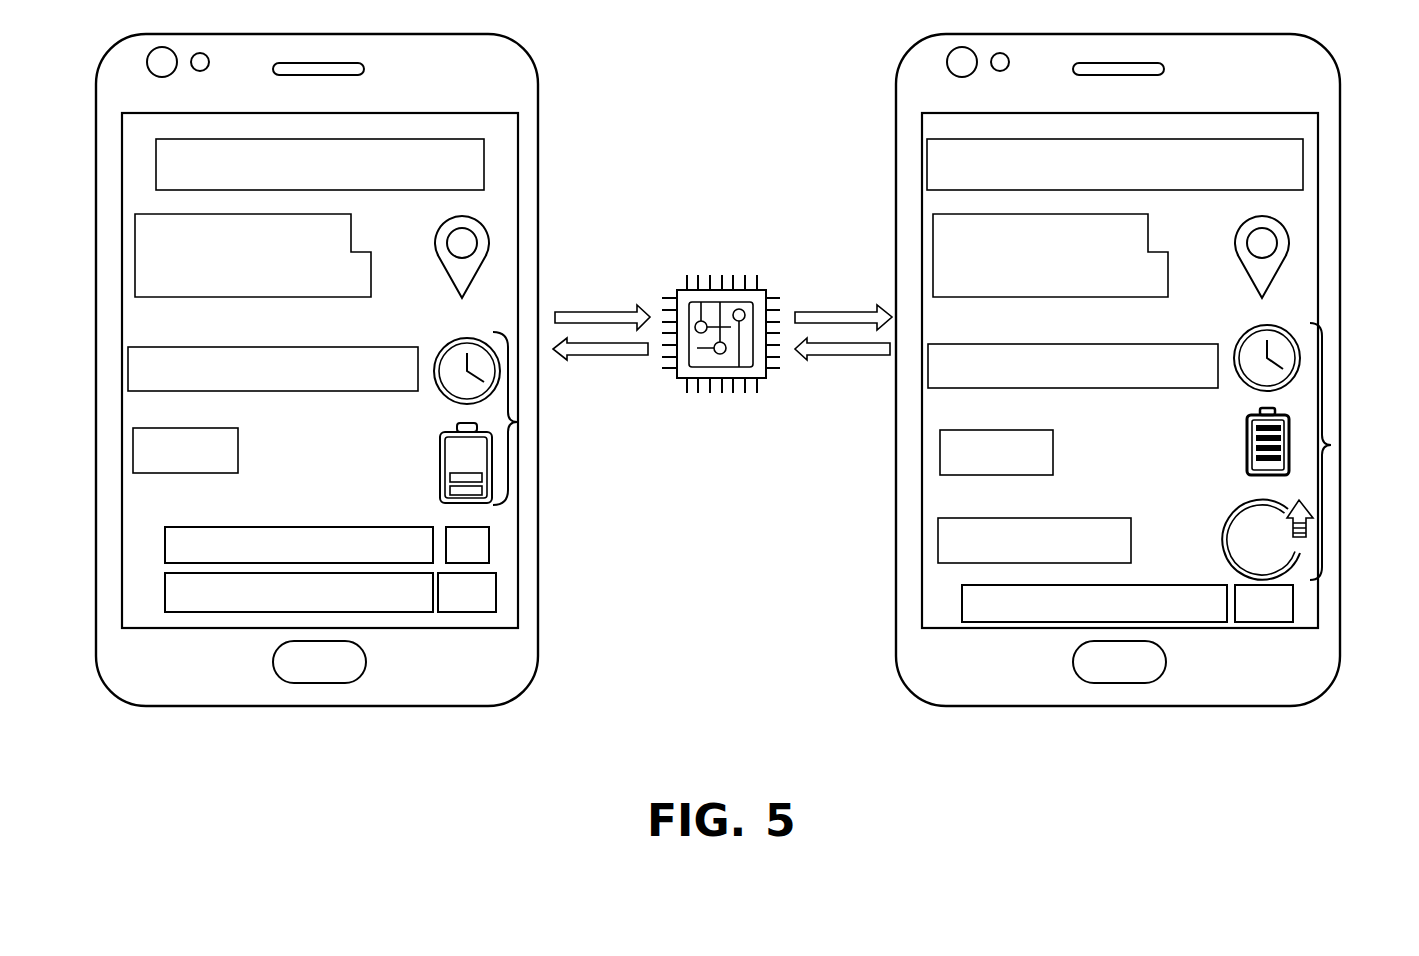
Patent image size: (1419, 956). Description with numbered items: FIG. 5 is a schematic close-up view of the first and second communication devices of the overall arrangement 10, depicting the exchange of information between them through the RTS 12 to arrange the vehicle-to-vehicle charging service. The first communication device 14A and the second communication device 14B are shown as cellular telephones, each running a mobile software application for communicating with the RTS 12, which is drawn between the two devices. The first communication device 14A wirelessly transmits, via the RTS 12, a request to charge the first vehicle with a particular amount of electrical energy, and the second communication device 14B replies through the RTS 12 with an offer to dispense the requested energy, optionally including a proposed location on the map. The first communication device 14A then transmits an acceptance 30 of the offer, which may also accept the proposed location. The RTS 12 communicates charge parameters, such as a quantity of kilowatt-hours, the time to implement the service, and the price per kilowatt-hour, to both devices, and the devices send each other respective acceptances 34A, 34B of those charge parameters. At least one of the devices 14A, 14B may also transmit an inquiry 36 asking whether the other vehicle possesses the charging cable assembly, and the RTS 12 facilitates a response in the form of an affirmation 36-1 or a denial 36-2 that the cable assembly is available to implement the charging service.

The system 10 is at (695, 134).
The RTS 12 is at (722, 275).
The first communication device 14A is at (336, 714).
The second communication device 14B is at (1141, 714).
The acceptance 30 is at (281, 558).
The acceptance of the charge parameters 34A is at (272, 603).
The acceptance of the charge parameters 34B is at (1073, 615).
The inquiry 36 is at (454, 558).
The affirmation 36-1 is at (1239, 615).
The denial 36-2 is at (442, 603).